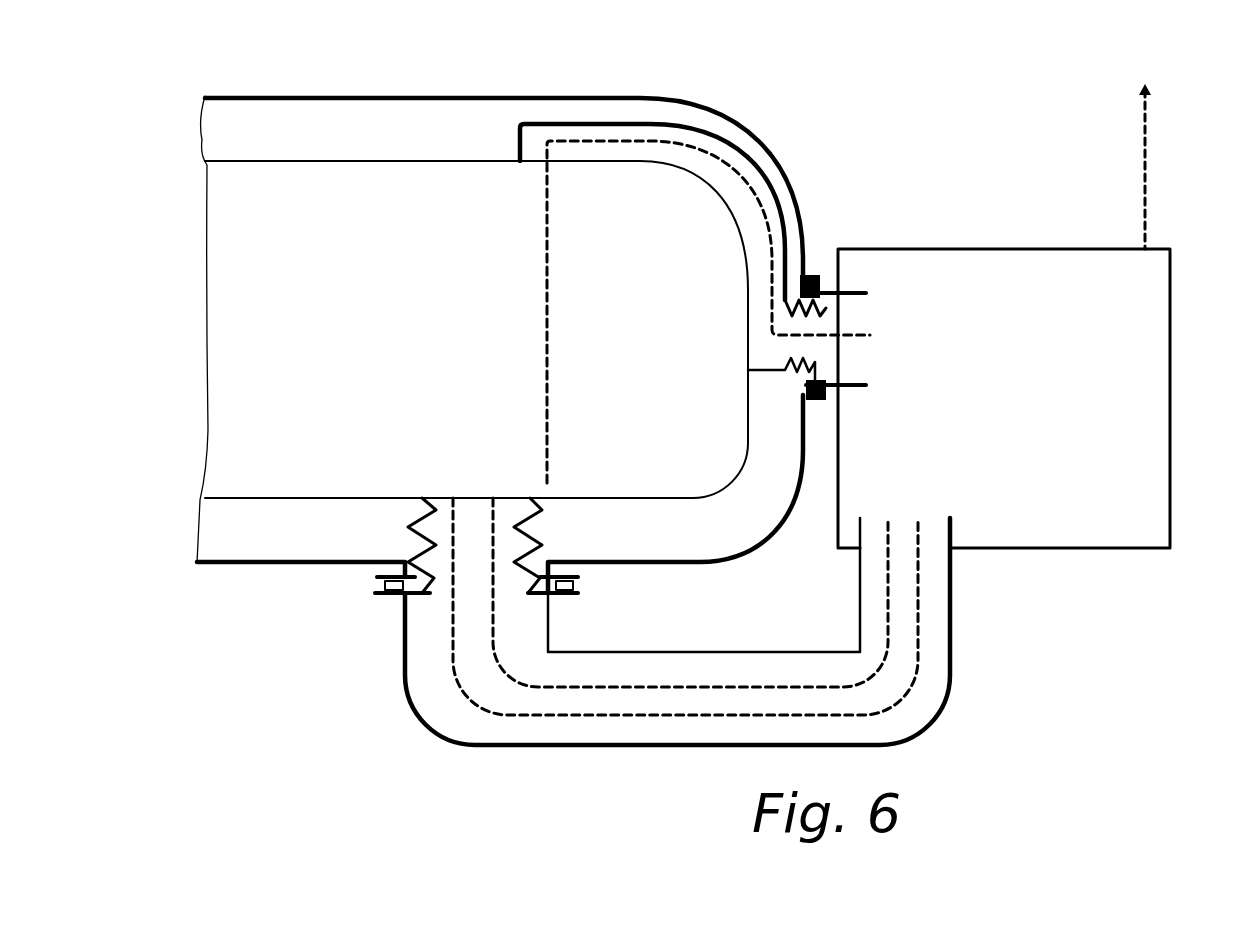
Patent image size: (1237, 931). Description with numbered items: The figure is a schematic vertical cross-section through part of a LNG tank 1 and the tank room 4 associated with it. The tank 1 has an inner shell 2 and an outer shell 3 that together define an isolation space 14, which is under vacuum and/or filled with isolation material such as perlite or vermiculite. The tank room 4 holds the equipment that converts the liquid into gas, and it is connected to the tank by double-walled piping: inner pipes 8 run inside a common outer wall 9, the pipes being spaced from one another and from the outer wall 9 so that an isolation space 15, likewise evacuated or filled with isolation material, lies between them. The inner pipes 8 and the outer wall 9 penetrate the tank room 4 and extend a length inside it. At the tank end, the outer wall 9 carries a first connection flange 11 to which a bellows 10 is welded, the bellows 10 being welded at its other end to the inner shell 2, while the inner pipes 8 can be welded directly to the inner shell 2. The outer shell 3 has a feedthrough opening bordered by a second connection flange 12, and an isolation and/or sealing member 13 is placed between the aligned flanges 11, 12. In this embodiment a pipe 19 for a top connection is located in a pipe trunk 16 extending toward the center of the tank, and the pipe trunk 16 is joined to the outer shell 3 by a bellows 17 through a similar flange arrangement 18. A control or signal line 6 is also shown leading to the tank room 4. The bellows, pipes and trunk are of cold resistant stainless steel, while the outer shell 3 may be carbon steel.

The LNG tank 1 is at (572, 59).
The inner shell 2 is at (412, 162).
The outer shell 3 is at (797, 203).
The tank room 4 is at (1172, 299).
The control line 6 is at (1148, 145).
The inner pipes 8 is at (665, 687).
The outer wall 9 is at (428, 727).
The bellows 10 is at (541, 527).
The first connection flange 11 is at (578, 598).
The second connection flange 12 is at (584, 562).
The isolation and/or sealing member 13 is at (576, 584).
The isolation space 14 is at (354, 148).
The isolation space 15 is at (733, 681).
The pipe trunk 16 is at (740, 155).
The bellows 17 is at (838, 318).
The flange arrangement 18 is at (815, 416).
The pipe 19 is at (857, 338).